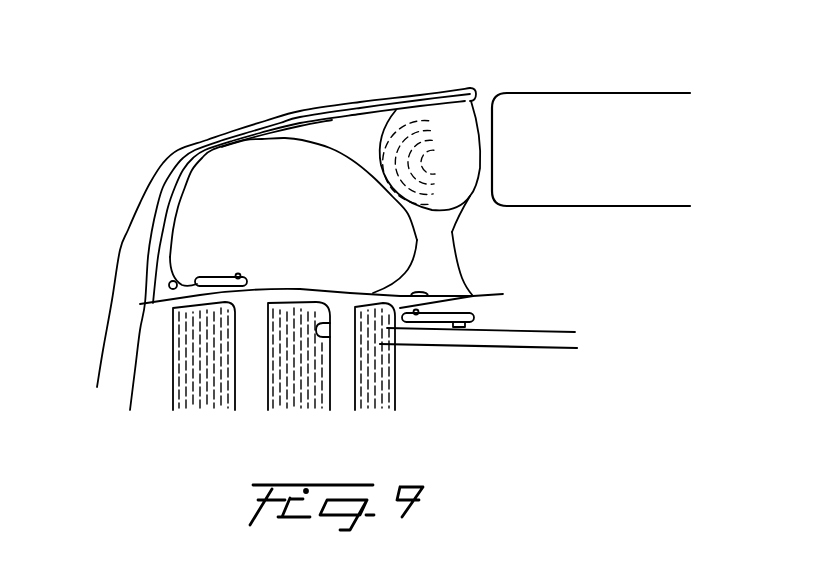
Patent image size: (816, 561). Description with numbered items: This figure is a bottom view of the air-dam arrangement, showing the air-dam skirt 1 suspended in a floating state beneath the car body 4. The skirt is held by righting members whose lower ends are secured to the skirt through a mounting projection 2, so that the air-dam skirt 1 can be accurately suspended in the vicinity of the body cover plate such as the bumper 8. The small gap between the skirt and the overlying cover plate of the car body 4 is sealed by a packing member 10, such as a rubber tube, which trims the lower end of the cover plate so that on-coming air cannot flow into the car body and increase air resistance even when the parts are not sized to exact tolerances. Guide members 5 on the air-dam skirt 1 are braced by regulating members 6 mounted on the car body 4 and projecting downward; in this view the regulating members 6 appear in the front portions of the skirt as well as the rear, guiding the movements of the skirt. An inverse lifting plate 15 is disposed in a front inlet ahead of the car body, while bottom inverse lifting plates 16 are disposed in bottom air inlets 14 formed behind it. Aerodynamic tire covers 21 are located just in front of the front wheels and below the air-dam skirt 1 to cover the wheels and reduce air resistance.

The air-dam skirt 1 is at (288, 283).
The mounting projection 2 is at (421, 292).
The car body 4 is at (560, 345).
The guide member 5 is at (168, 285).
The regulating member 6 is at (205, 272).
The bumper 8 is at (120, 255).
The packing member 10 is at (208, 150).
The bottom air inlet 14 is at (217, 432).
The inverse lifting plate 15 is at (200, 400).
The bottom inverse lifting plate 16 is at (290, 412).
The aerodynamic tire cover 21 is at (430, 126).